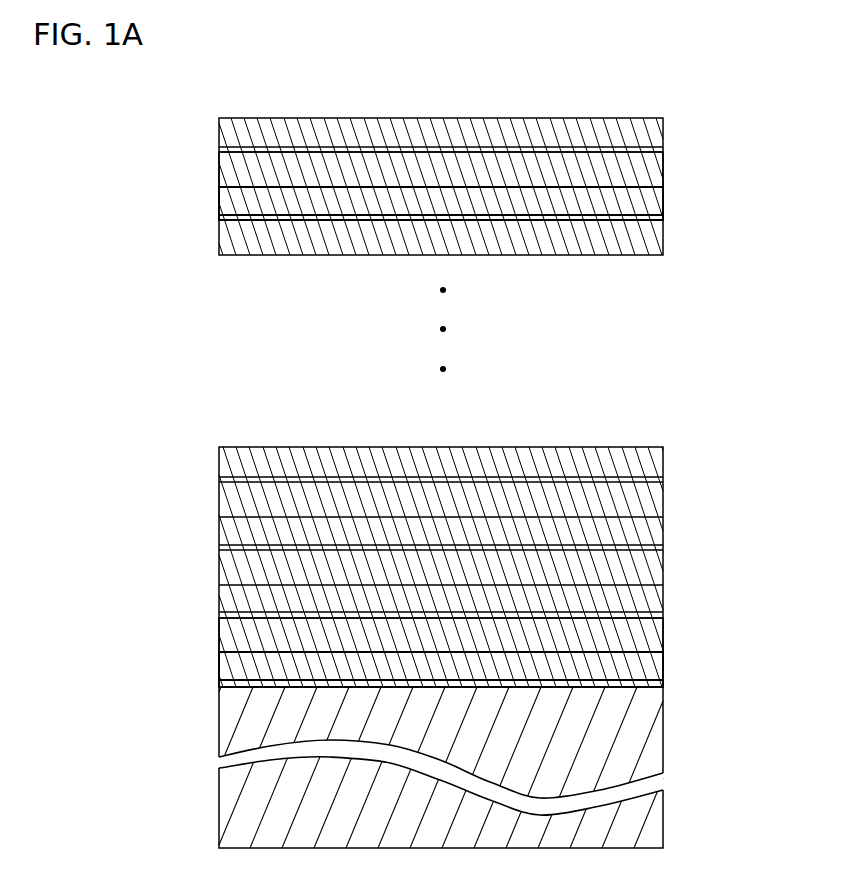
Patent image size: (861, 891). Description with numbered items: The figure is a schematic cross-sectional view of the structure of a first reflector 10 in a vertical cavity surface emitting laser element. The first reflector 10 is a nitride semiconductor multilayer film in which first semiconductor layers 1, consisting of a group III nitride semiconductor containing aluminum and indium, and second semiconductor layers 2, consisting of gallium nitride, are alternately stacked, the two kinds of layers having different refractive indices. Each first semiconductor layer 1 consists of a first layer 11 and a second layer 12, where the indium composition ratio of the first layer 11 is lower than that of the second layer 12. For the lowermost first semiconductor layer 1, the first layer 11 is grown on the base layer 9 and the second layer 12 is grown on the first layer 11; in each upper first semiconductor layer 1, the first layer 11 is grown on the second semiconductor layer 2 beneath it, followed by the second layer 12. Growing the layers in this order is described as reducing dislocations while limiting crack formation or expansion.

The first reflector 10 is at (187, 118).
The first semiconductor layer 1 is at (768, 160).
The second semiconductor layer 2 is at (642, 172).
The first layer 11 is at (652, 217).
The second layer 12 is at (640, 203).
The base layer 9 is at (652, 750).